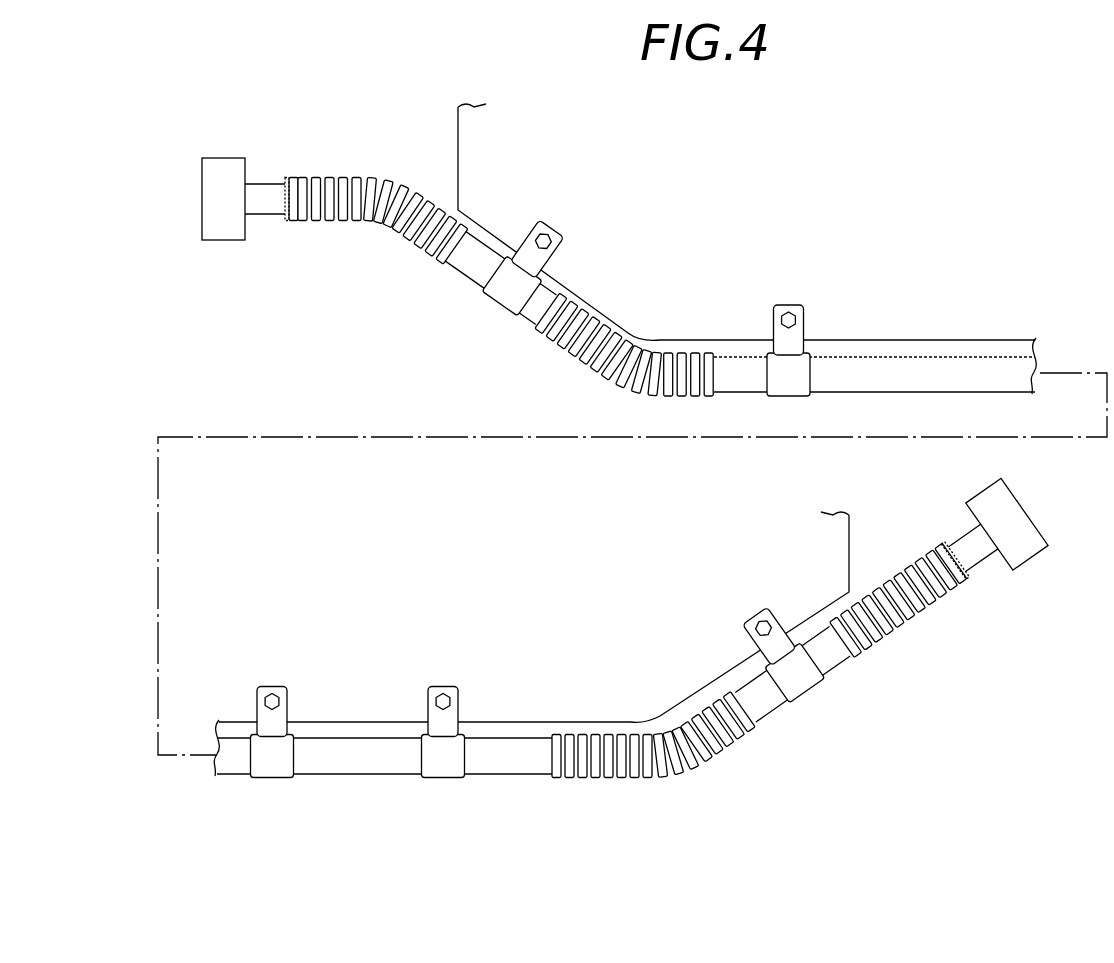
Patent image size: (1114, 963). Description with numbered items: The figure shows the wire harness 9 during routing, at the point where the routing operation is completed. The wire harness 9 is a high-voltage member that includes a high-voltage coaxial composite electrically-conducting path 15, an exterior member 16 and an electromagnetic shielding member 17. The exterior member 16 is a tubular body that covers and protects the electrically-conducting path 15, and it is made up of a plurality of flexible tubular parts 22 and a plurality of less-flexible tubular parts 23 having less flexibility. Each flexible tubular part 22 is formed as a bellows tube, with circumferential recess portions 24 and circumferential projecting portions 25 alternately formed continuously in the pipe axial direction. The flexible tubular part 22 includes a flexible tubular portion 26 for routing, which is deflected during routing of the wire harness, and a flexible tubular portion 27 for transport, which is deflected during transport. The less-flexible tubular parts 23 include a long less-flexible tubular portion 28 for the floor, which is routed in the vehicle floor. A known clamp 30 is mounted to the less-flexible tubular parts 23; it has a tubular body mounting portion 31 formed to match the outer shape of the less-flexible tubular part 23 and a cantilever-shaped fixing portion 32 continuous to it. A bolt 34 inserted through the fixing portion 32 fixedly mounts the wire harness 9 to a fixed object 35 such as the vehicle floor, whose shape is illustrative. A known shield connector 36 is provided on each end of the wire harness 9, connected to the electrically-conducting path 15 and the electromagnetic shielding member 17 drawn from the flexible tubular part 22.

The wire harness 9 is at (463, 338).
The high-voltage coaxial composite electrically-conducting path 15 is at (265, 203).
The exterior member 16 is at (1000, 372).
The electromagnetic shielding member 17 is at (262, 188).
The flexible tubular part 22 is at (350, 178).
The less-flexible tubular part 23 is at (443, 262).
The circumferential recess portion 24 is at (287, 225).
The circumferential projecting portion 25 is at (298, 225).
The flexible tubular portion for routing 26 is at (407, 185).
The flexible tubular portion for transport 27 is at (638, 341).
The less-flexible tubular portion for the floor 28 is at (940, 388).
The clamp 30 is at (549, 533).
The tubular body mounting portion 31 is at (800, 375).
The fixing portion 32 is at (547, 478).
The bolt 34 is at (537, 238).
The fixed object 35 is at (456, 188).
The shield connector 36 is at (225, 235).